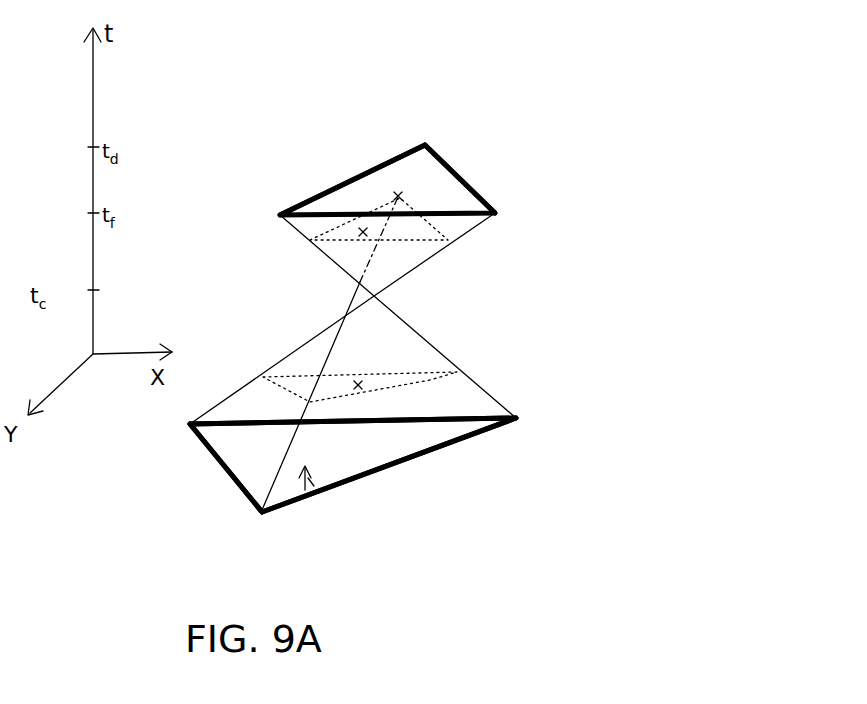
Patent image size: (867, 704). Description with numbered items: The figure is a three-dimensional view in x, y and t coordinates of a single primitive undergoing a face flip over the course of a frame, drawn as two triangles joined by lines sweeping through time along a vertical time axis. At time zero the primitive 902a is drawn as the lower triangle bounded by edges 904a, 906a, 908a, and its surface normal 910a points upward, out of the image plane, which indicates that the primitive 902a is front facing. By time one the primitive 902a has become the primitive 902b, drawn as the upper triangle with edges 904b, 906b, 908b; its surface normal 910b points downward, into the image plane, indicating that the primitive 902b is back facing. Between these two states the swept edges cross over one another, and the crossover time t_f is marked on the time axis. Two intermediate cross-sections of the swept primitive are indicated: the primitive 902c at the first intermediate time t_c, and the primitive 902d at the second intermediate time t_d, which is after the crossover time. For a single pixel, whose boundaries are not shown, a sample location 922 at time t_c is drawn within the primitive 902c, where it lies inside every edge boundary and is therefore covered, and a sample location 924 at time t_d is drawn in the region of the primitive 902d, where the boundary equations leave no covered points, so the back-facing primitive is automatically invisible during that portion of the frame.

The primitive 902a is at (356, 462).
The primitive 902b is at (432, 163).
The primitive 902c is at (457, 370).
The primitive 902d is at (425, 243).
The edge 904a is at (225, 470).
The edge 904b is at (468, 178).
The edge 906a is at (455, 412).
The edge 906b is at (460, 218).
The edge 908a is at (452, 440).
The edge 908b is at (346, 175).
The surface normal 910a is at (300, 478).
The surface normal 910b is at (428, 200).
The sample location 922 is at (362, 380).
The sample location 924 is at (362, 242).